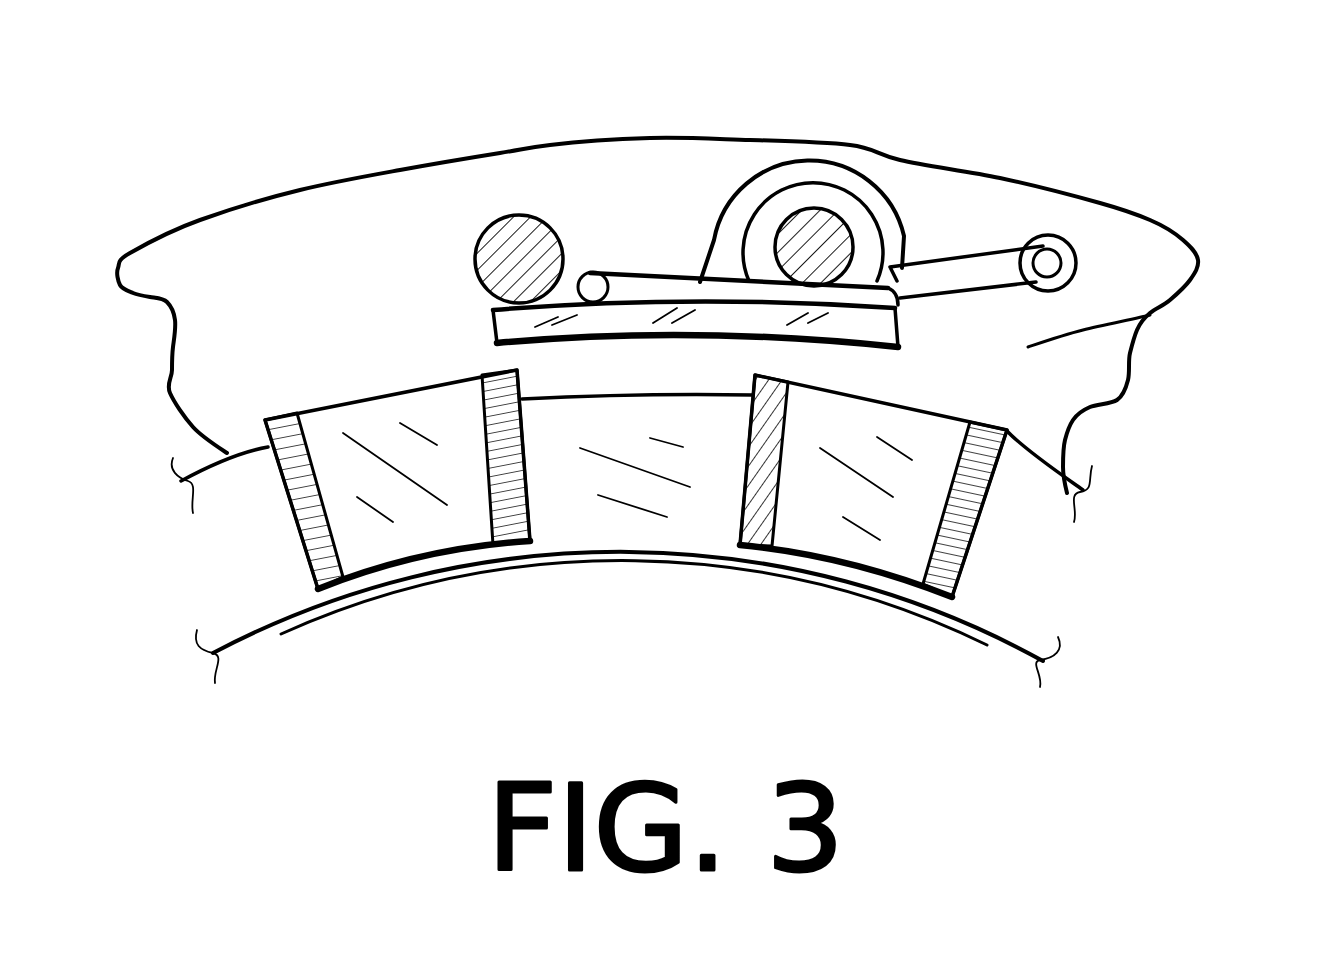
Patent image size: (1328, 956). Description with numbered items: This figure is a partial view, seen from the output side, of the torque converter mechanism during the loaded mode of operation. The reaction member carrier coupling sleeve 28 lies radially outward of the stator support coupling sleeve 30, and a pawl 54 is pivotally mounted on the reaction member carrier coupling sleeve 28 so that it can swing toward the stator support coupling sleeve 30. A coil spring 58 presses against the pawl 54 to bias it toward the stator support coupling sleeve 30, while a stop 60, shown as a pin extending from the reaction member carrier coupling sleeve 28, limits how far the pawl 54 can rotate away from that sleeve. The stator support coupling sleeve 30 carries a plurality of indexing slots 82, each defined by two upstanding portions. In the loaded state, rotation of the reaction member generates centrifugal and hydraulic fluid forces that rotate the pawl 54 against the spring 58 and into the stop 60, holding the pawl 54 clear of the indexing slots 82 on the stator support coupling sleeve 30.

The reaction member carrier coupling sleeve 28 is at (1150, 315).
The stator support coupling sleeve 30 is at (840, 480).
The pawl 54 is at (613, 315).
The coil spring 58 is at (953, 277).
The stop 60 is at (518, 260).
The indexing slots 82 is at (607, 500).